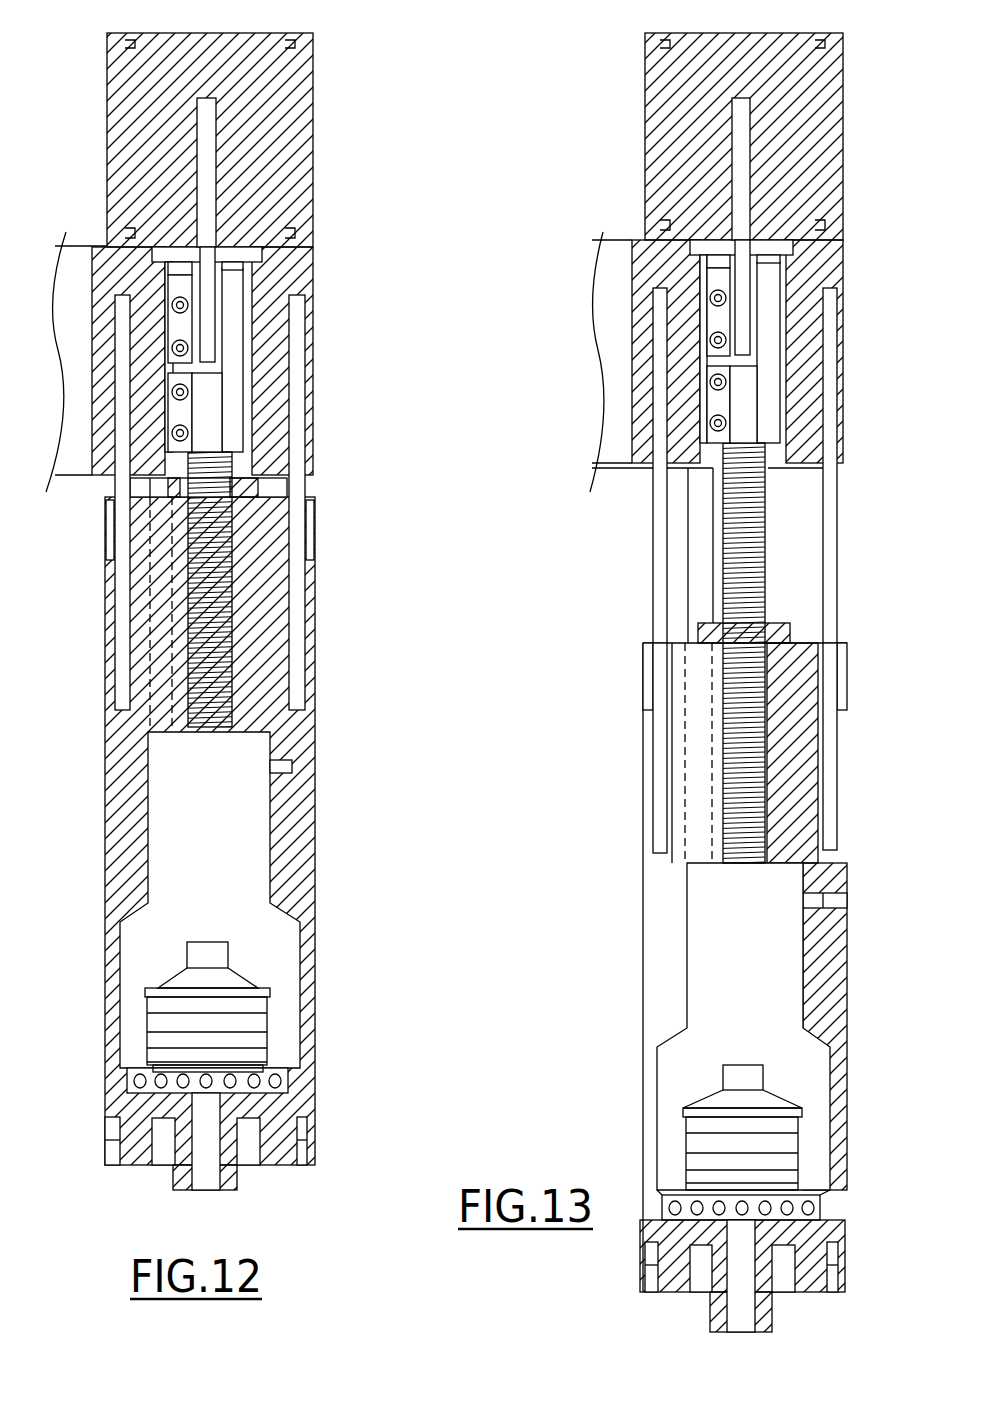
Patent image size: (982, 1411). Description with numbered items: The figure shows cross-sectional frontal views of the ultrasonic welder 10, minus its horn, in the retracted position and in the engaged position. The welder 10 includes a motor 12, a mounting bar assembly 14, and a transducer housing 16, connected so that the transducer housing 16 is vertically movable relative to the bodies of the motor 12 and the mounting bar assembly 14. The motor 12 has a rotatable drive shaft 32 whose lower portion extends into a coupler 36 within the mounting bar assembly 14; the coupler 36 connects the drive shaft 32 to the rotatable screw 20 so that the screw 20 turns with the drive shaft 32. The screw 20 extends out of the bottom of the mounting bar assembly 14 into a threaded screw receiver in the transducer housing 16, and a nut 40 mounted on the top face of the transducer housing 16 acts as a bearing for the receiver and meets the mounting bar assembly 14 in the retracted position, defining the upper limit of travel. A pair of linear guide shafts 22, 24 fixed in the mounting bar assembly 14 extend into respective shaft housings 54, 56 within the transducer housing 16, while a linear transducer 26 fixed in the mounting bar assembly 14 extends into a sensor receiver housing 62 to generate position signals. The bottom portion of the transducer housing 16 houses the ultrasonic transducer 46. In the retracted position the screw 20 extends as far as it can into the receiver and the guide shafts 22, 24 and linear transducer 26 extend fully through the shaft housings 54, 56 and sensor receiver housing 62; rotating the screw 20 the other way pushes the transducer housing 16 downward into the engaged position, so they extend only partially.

In FIG. 12, the welder 10 is at (330, 88).
In FIG. 13, the welder 10 is at (607, 92).
In FIG. 12, the motor 12 is at (313, 168).
In FIG. 13, the motor 12 is at (845, 133).
In FIG. 12, the mounting bar assembly 14 is at (313, 370).
In FIG. 13, the mounting bar assembly 14 is at (848, 380).
In FIG. 12, the transducer housing 16 is at (314, 651).
In FIG. 13, the transducer housing 16 is at (847, 722).
In FIG. 12, the screw 20 is at (233, 717).
In FIG. 13, the screw 20 is at (765, 512).
In FIG. 12, the linear guide shaft 22 is at (120, 665).
In FIG. 13, the linear guide shaft 22 is at (660, 595).
In FIG. 12, the linear guide shaft 24 is at (293, 447).
In FIG. 13, the linear guide shaft 24 is at (834, 517).
In FIG. 12, the linear transducer 26 is at (150, 482).
In FIG. 13, the linear transducer 26 is at (698, 520).
In FIG. 12, the drive shaft 32 is at (207, 140).
In FIG. 13, the drive shaft 32 is at (742, 148).
In FIG. 12, the coupler 36 is at (233, 313).
In FIG. 13, the coupler 36 is at (770, 295).
In FIG. 13, the nut 40 is at (775, 622).
In FIG. 12, the ultrasonic transducer 46 is at (255, 1025).
In FIG. 13, the ultrasonic transducer 46 is at (783, 1147).
In FIG. 13, the shaft housing 54 is at (663, 798).
In FIG. 13, the shaft housing 56 is at (828, 810).
In FIG. 13, the sensor receiver housing 62 is at (685, 825).